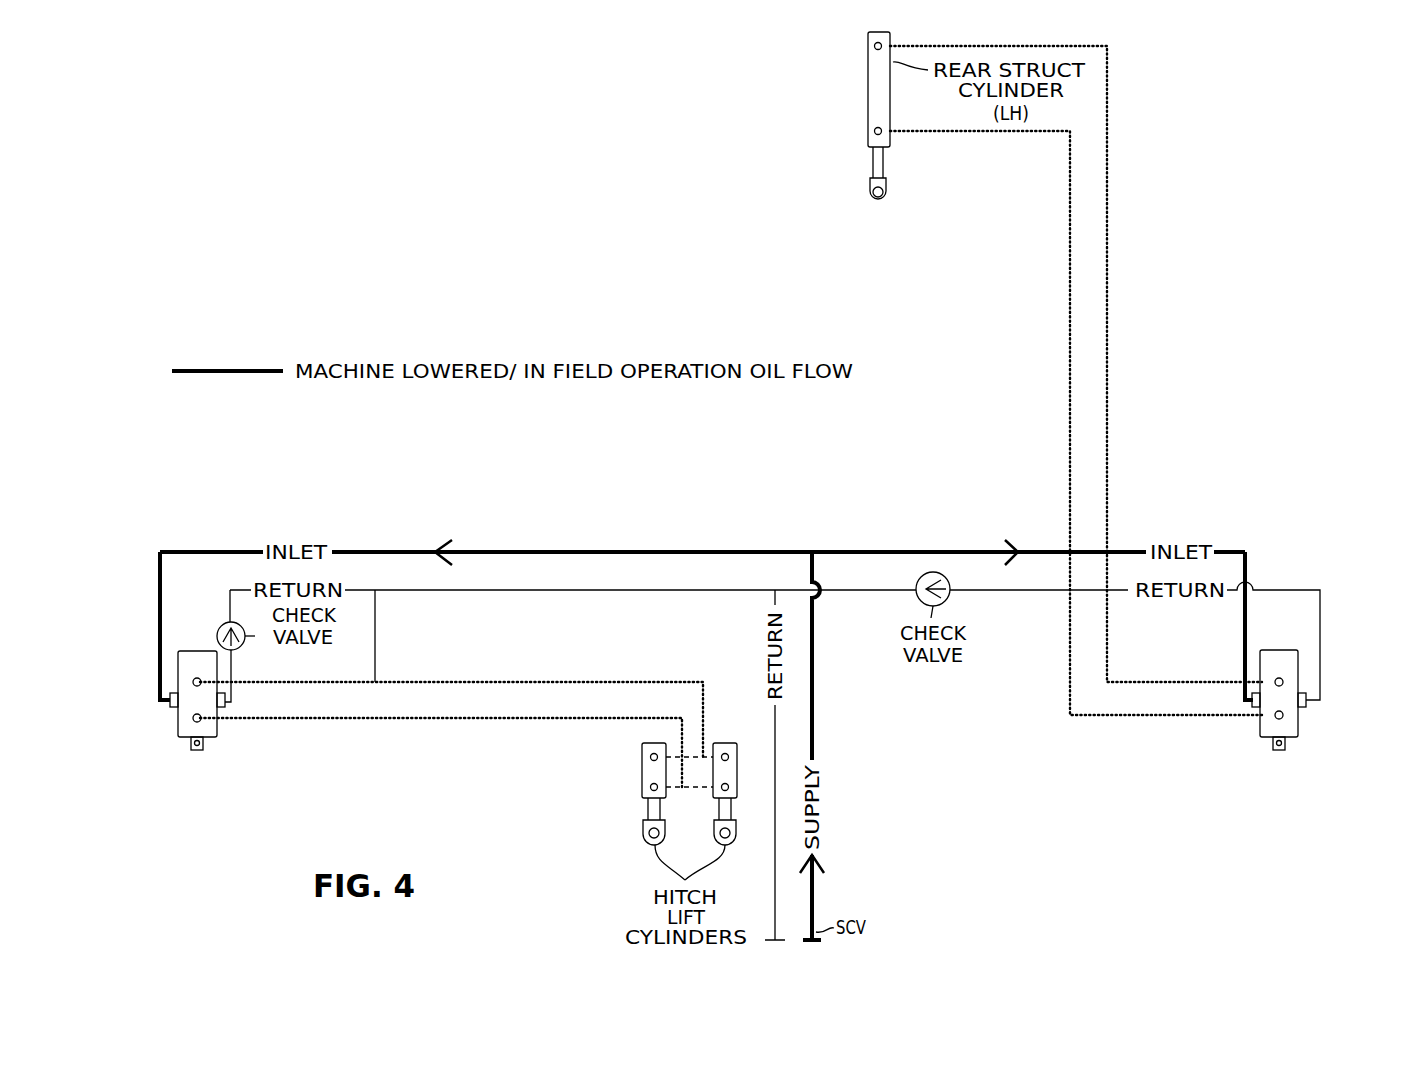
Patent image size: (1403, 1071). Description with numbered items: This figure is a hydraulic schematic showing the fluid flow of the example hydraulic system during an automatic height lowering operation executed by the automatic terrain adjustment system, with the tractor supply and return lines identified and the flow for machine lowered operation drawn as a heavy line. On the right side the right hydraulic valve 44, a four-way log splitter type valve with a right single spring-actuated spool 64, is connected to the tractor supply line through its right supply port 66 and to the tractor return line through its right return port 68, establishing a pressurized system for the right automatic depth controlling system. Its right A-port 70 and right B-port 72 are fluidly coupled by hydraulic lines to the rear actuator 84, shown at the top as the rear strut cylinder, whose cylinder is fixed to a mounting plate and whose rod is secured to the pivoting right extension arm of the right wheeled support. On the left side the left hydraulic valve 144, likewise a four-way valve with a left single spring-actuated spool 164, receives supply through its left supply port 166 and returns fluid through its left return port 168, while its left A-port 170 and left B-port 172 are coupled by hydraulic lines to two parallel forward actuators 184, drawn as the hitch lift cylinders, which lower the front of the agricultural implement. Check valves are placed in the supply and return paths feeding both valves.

The rear actuator 84 is at (877, 90).
The right hydraulic valve 44 is at (1297, 712).
The right single spring-actuated spool 64 is at (1285, 751).
The right supply port 66 is at (1255, 707).
The right return port 68 is at (1307, 708).
The right A-port 70 is at (1276, 722).
The right B-port 72 is at (1273, 684).
The left hydraulic valve 144 is at (213, 712).
The left single spring-actuated spool 164 is at (203, 751).
The left supply port 166 is at (172, 707).
The left return port 168 is at (226, 708).
The left A-port 170 is at (196, 722).
The left B-port 172 is at (196, 677).
The forward actuator 184 is at (642, 775).